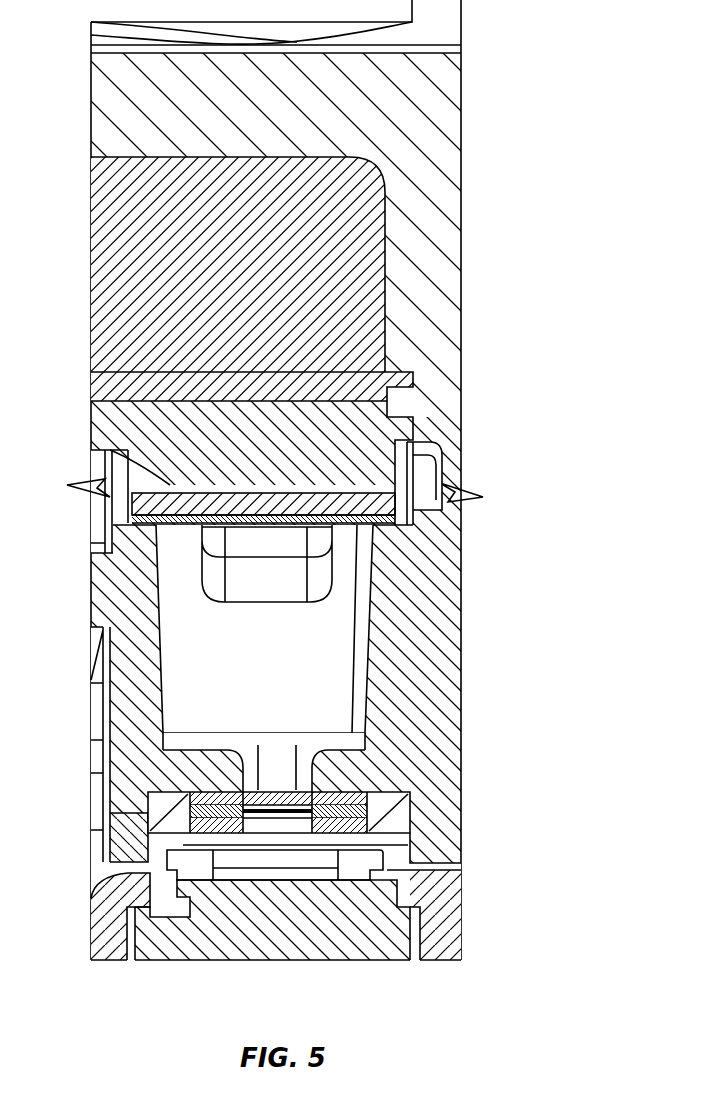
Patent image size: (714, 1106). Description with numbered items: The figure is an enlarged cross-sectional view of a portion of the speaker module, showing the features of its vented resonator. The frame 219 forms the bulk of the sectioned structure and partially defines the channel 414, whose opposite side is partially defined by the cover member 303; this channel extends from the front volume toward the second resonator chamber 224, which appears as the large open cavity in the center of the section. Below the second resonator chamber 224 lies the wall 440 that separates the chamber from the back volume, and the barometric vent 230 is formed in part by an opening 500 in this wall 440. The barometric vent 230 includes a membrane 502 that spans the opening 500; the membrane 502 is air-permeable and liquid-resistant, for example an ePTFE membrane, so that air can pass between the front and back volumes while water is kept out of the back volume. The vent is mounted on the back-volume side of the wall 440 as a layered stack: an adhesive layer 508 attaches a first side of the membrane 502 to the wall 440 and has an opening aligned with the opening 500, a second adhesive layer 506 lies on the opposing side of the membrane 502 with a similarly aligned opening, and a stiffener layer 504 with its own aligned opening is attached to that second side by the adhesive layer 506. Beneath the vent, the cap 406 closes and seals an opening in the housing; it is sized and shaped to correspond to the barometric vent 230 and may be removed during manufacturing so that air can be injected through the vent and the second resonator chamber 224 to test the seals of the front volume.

The frame 219 is at (438, 628).
The second resonator chamber 224 is at (188, 637).
The cover member 303 is at (443, 492).
The channel 414 is at (284, 575).
The wall 440 is at (343, 760).
The opening 500 is at (278, 875).
The membrane 502 is at (280, 815).
The stiffener layer 504 is at (310, 826).
The adhesive layer 506 is at (300, 811).
The adhesive layer 508 is at (300, 797).
The barometric vent 230 is at (183, 839).
The cap 406 is at (303, 897).